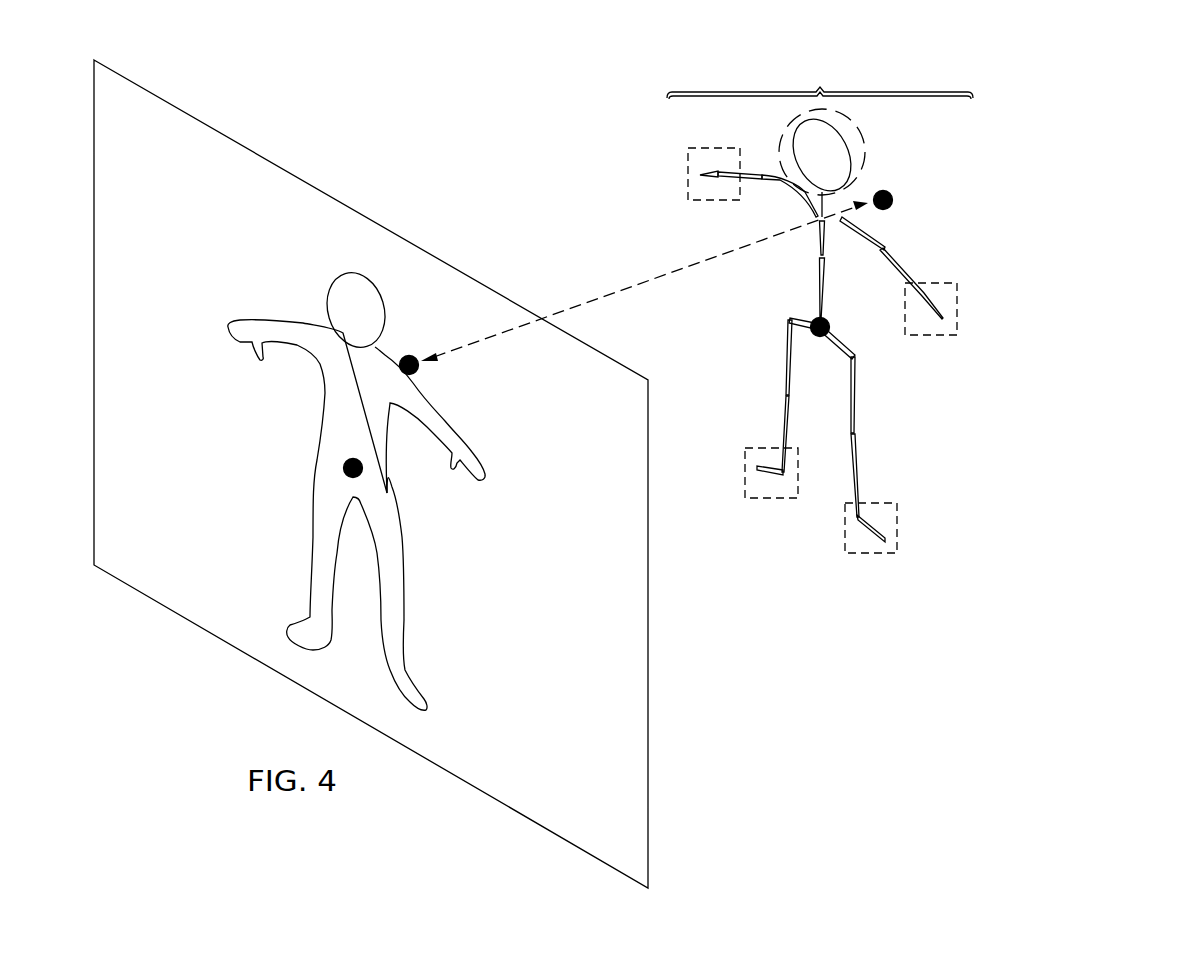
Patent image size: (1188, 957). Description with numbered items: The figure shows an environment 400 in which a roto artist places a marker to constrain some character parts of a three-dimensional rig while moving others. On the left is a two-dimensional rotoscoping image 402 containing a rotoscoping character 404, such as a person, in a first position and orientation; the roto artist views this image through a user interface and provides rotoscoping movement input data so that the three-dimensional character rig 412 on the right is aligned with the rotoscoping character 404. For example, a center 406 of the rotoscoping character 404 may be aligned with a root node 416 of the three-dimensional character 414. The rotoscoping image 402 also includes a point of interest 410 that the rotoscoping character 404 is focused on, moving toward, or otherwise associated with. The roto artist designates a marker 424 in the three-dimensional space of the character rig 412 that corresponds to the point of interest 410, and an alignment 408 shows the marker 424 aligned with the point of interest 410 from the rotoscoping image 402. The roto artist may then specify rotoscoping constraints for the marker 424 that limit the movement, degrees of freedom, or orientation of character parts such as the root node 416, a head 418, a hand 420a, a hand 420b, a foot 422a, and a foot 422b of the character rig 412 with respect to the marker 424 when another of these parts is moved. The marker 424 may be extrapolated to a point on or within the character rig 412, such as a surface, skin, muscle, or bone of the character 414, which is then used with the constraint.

The environment 400 is at (1140, 135).
The 2D rotoscoping image 402 is at (378, 216).
The rotoscoping character 404 is at (446, 574).
The center 406 is at (355, 456).
The alignment 408 is at (644, 281).
The point of interest 410 is at (410, 353).
The 3D character rig 412 is at (824, 321).
The 3D character 414 is at (921, 456).
The root node 416 is at (829, 323).
The head 418 is at (866, 147).
The hand 420a is at (932, 337).
The hand 420b is at (715, 202).
The foot 422a is at (870, 555).
The foot 422b is at (770, 500).
The marker 424 is at (900, 196).